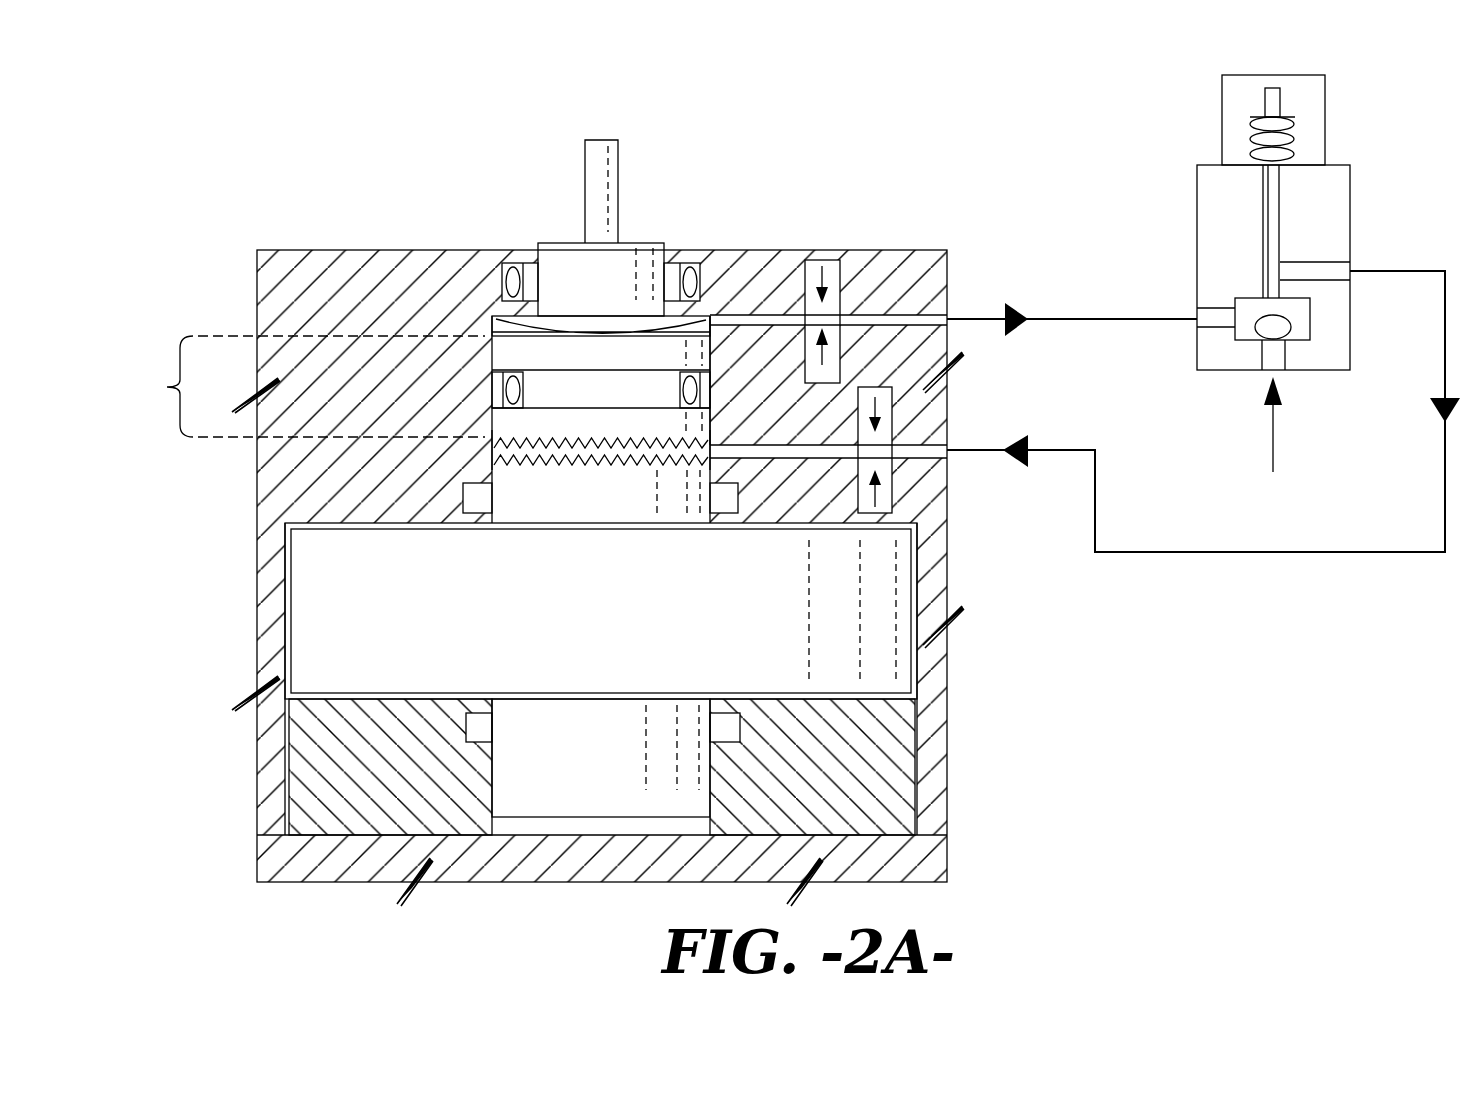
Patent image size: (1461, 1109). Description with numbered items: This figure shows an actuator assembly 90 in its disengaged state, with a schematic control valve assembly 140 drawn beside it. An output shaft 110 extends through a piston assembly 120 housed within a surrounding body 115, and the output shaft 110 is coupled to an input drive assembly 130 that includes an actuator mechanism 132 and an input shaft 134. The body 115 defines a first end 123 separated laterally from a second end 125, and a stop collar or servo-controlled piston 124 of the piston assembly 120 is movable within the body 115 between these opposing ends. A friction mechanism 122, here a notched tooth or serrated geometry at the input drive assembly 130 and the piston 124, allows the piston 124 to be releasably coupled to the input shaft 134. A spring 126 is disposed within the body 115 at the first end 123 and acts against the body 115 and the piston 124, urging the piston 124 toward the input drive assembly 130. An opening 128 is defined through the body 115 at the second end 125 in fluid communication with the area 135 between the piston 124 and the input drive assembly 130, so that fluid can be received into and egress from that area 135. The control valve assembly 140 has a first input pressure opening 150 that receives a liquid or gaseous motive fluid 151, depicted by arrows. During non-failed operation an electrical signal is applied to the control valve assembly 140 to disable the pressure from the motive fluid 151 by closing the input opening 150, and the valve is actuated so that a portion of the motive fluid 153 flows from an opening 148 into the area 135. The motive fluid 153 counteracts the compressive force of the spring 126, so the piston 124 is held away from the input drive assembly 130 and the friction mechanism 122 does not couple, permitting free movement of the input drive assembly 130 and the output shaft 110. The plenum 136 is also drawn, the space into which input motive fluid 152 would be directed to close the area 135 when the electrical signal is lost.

The actuator assembly 90 is at (453, 162).
The output shaft 110 is at (618, 187).
The body 115 is at (487, 408).
The piston assembly 120 is at (615, 392).
The friction mechanism 122 is at (657, 452).
The first end 123 is at (713, 308).
The stop collar or servo-controlled piston 124 is at (296, 386).
The second end 125 is at (490, 452).
The spring 126 is at (563, 325).
The opening 128 is at (718, 440).
The input drive assembly 130 is at (323, 606).
The actuator mechanism 132 is at (628, 627).
The input shaft 134 is at (627, 512).
The area 135 is at (880, 410).
The plenum 136 is at (823, 274).
The control valve assembly 140 is at (1347, 135).
The opening 148 is at (1352, 262).
The first input pressure opening 150 is at (1268, 372).
The motive fluid 151 is at (1275, 438).
The motive fluid 152 is at (1073, 318).
The motive fluid 153 is at (1404, 272).